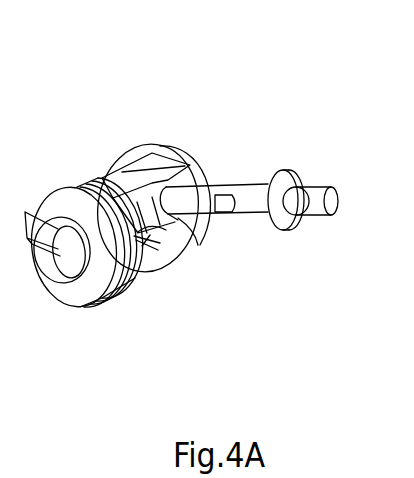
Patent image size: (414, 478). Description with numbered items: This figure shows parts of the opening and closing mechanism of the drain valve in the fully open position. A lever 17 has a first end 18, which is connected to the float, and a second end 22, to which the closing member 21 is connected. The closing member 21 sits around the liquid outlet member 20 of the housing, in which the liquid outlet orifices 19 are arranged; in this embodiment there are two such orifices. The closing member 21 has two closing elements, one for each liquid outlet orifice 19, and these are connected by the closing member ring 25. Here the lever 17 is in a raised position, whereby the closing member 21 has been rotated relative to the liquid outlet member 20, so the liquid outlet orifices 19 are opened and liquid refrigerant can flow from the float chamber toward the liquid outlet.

The lever 17 is at (250, 197).
The first end 18 is at (313, 197).
The liquid outlet orifice 19 is at (142, 240).
The liquid outlet member 20 is at (110, 170).
The closing member 21 is at (152, 162).
The second end 22 is at (172, 210).
The closing member ring 25 is at (123, 158).